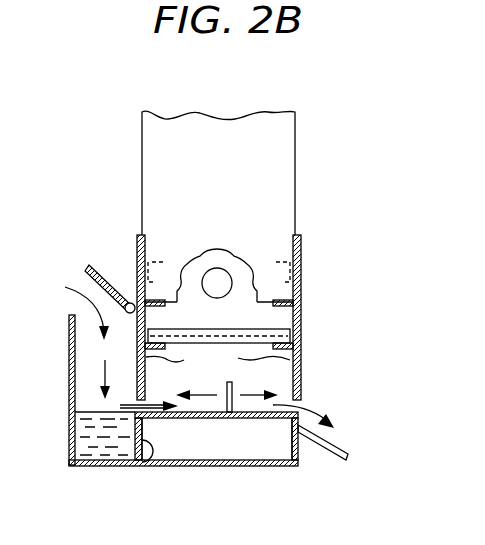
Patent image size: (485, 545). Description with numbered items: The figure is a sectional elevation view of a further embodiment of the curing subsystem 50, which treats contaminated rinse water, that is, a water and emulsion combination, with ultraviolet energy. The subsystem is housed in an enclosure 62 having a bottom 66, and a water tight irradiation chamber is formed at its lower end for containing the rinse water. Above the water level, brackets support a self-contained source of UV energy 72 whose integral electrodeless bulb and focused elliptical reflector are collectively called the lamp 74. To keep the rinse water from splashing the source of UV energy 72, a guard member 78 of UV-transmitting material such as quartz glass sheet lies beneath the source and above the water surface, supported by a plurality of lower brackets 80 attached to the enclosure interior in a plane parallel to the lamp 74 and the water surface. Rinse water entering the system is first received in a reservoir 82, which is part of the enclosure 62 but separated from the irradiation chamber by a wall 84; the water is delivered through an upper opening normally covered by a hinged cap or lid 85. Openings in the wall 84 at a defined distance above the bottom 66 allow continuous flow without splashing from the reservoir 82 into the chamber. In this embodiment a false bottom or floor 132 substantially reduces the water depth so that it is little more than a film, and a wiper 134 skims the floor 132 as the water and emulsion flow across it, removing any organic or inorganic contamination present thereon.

The curing subsystem 50 is at (336, 257).
The source of UV energy 72 is at (283, 137).
The lamp 74 is at (211, 249).
The cap or lid 85 is at (108, 270).
The guard member 78 is at (273, 336).
The lower brackets 80 is at (218, 361).
The reservoir 82 is at (69, 370).
The bottom 66 is at (238, 467).
The floor 132 is at (238, 421).
The wall 84 is at (148, 464).
The wiper 134 is at (233, 382).
The enclosure 62 is at (320, 392).